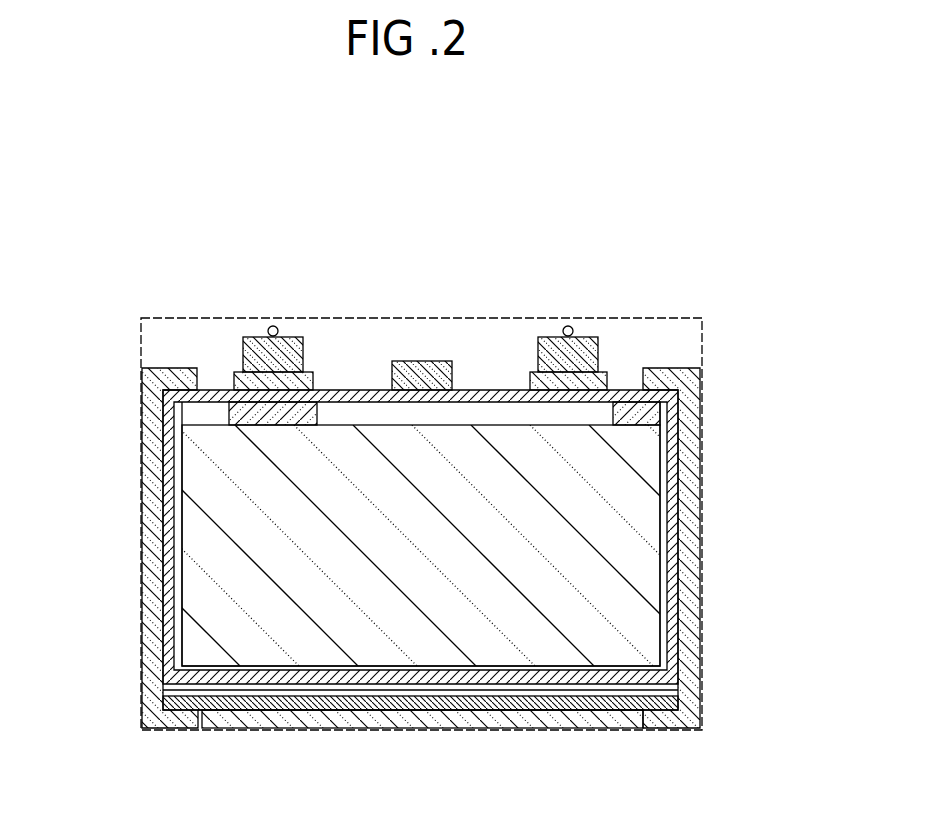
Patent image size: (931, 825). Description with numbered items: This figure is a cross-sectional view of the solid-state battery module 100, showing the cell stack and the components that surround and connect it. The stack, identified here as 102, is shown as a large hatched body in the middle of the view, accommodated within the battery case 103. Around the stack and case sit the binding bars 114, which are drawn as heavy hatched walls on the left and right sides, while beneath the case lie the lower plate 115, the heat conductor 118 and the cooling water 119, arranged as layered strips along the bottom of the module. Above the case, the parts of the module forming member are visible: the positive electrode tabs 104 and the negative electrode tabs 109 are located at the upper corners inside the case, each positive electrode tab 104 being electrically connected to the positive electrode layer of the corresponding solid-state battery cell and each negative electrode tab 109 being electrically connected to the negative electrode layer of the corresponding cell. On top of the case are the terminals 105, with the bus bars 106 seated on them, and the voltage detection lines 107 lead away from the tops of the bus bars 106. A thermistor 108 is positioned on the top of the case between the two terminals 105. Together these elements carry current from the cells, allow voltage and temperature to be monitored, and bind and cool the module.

The solid-state battery module 100 is at (750, 245).
The electrode assembly 102 is at (605, 523).
The battery case 103 is at (680, 463).
The positive electrode tab 104 is at (232, 413).
The terminal 105 is at (234, 377).
The bus bar 106 is at (243, 349).
The voltage detection line 107 is at (273, 326).
The thermistor 108 is at (418, 361).
The negative electrode tab 109 is at (612, 414).
The binding bar 114 is at (153, 573).
The lower plate 115 is at (298, 710).
The heat conductor 118 is at (431, 697).
The cooling water 119 is at (559, 715).